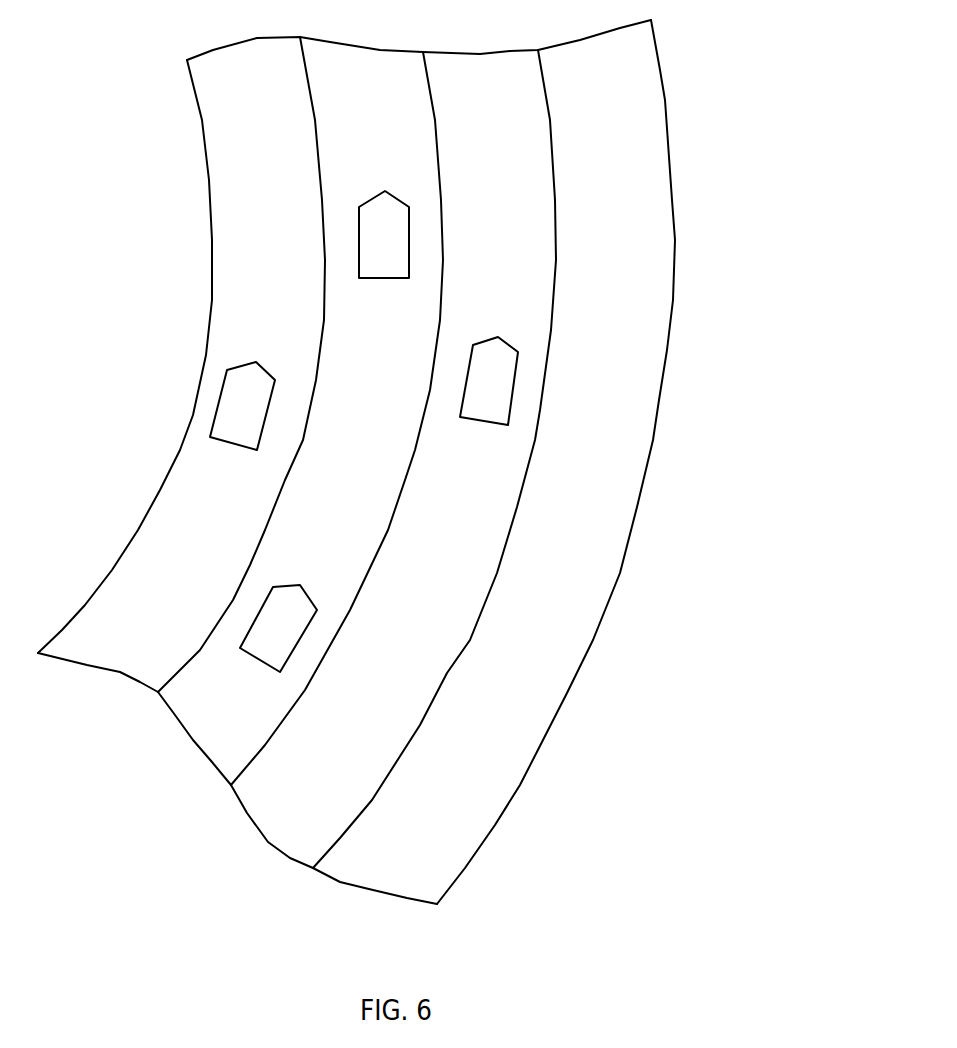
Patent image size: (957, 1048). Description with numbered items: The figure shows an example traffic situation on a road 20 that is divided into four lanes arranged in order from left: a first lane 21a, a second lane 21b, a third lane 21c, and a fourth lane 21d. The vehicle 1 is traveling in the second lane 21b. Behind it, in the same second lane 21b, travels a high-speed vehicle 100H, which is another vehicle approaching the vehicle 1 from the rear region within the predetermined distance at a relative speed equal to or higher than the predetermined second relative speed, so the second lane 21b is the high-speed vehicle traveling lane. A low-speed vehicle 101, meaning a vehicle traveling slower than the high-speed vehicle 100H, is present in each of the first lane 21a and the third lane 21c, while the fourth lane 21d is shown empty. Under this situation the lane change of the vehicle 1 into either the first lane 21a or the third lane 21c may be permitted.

The road 20 is at (410, 489).
The vehicle 1 is at (375, 200).
The low-speed vehicle 101 is at (242, 365).
The high-speed vehicle 100H is at (308, 593).
The first lane 21a is at (88, 668).
The second lane 21b is at (194, 742).
The third lane 21c is at (266, 842).
The fourth lane 21d is at (371, 888).